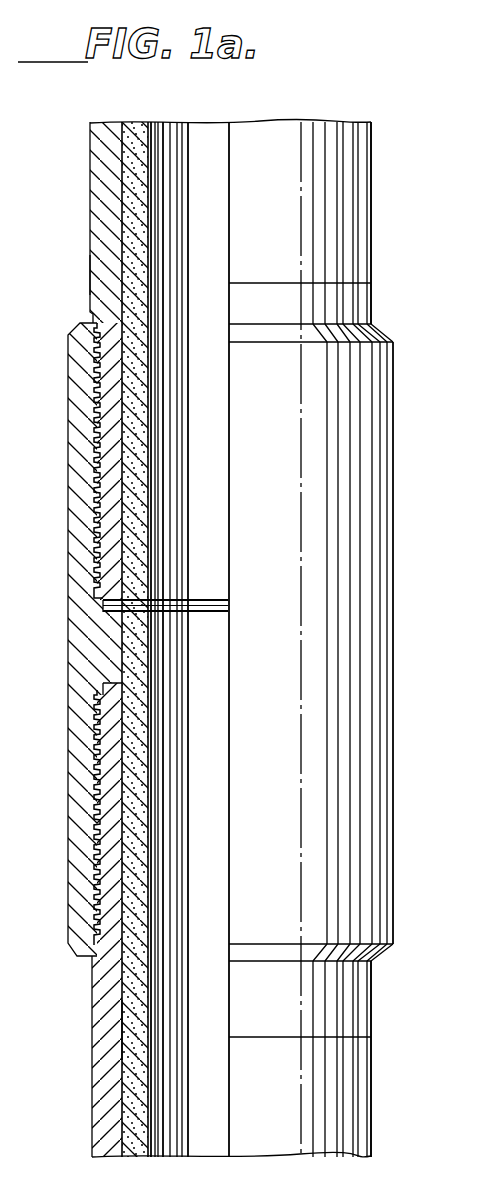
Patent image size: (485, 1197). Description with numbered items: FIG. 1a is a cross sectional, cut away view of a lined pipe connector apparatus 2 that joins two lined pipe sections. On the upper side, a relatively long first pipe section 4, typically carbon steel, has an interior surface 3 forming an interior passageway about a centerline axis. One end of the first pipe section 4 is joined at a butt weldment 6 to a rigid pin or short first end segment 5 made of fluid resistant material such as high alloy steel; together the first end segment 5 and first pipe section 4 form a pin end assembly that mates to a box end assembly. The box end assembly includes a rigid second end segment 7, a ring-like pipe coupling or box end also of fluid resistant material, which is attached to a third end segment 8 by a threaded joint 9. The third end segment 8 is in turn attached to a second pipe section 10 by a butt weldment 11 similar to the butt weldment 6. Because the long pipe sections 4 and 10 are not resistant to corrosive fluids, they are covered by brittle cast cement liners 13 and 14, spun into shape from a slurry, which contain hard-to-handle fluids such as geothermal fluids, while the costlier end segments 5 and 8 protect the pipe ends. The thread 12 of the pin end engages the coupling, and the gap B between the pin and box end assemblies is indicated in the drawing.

The lined pipe connector apparatus 2 is at (414, 268).
The interior surface 3 is at (130, 207).
The first pipe section 4 is at (90, 160).
The first end segment 5 is at (92, 308).
The butt weldment 6 is at (90, 272).
The second end segment 7 is at (70, 412).
The third end segment 8 is at (92, 992).
The threaded joint 9 is at (95, 850).
The second pipe section 10 is at (95, 1087).
The butt weldment 11 is at (128, 1028).
The thread 12 is at (96, 488).
The fluid resistant liner 13 is at (150, 460).
The fluid resistant liner 14 is at (150, 908).
The gap width B is at (213, 613).